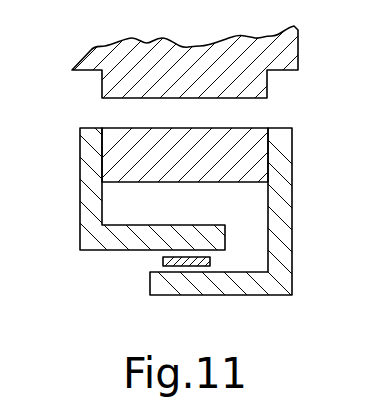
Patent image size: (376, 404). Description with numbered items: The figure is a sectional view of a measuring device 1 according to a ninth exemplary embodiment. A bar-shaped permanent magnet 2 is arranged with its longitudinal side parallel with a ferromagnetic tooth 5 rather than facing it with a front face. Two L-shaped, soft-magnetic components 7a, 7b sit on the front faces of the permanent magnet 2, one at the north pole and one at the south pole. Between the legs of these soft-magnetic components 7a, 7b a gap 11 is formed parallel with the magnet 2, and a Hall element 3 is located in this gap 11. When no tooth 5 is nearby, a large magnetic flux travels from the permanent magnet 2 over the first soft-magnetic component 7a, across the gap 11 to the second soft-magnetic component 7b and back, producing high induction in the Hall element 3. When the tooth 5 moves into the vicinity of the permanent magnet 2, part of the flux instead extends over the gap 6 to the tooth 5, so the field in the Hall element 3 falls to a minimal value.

The measuring device 1 is at (188, 209).
The permanent magnet 2 is at (240, 123).
The Hall element 3 is at (161, 265).
The tooth 5 is at (268, 85).
The gap 6 is at (176, 121).
The first soft-magnetic component 7a is at (280, 202).
The second soft-magnetic component 7b is at (92, 153).
The gap 11 is at (143, 260).